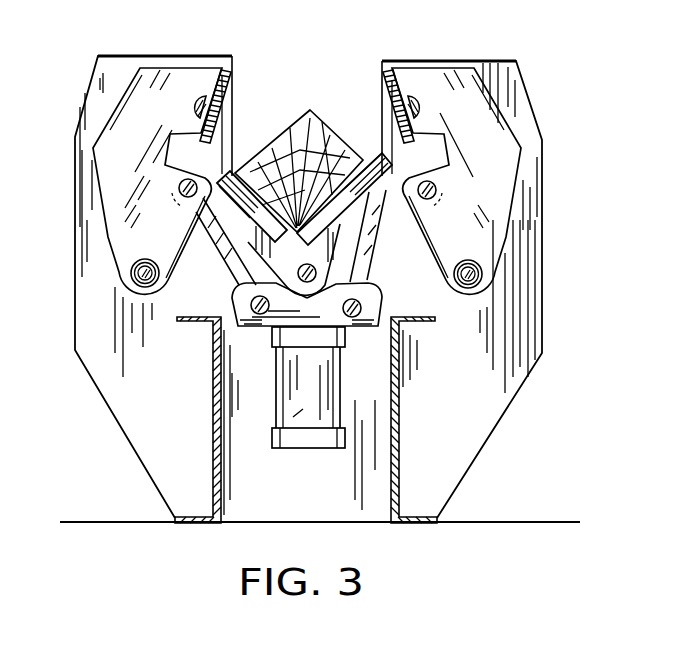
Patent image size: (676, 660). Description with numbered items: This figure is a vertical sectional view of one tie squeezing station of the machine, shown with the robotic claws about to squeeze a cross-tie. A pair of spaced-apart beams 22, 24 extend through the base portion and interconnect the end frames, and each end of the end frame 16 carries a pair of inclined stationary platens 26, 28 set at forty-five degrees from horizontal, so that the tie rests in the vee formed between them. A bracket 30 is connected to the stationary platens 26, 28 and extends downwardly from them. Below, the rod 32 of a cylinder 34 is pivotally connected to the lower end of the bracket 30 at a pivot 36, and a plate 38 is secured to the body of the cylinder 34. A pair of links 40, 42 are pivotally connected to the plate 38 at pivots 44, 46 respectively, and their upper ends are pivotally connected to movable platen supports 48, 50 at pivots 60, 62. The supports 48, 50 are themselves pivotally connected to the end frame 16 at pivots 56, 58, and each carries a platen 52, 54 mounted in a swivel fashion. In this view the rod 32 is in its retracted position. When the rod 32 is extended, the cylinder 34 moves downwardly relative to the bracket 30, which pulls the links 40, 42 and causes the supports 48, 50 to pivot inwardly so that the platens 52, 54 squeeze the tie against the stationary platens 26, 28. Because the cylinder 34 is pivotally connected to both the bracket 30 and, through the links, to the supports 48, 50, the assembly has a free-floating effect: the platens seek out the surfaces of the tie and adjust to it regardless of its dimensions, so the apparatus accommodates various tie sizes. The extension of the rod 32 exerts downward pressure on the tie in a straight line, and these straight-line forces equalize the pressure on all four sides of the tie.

The end frame 16 is at (545, 204).
The beam 22 is at (208, 413).
The beam 24 is at (398, 427).
The inclined stationary platen 26 is at (233, 172).
The inclined stationary platen 28 is at (381, 152).
The bracket 30 is at (334, 232).
The rod 32 is at (318, 270).
The cylinder 34 is at (272, 447).
The pivotal connection 36 is at (294, 272).
The plate 38 is at (374, 298).
The link 40 is at (212, 238).
The link 42 is at (404, 240).
The pivotal connection 44 is at (252, 310).
The pivotal connection 46 is at (358, 343).
The movable platen support 48 is at (153, 132).
The movable platen support 50 is at (428, 100).
The platen 52 is at (233, 73).
The platen 54 is at (383, 72).
The pivotal connection 56 is at (131, 276).
The pivotal connection 58 is at (482, 277).
The pivotal connection 60 is at (176, 183).
The pivotal connection 62 is at (440, 187).